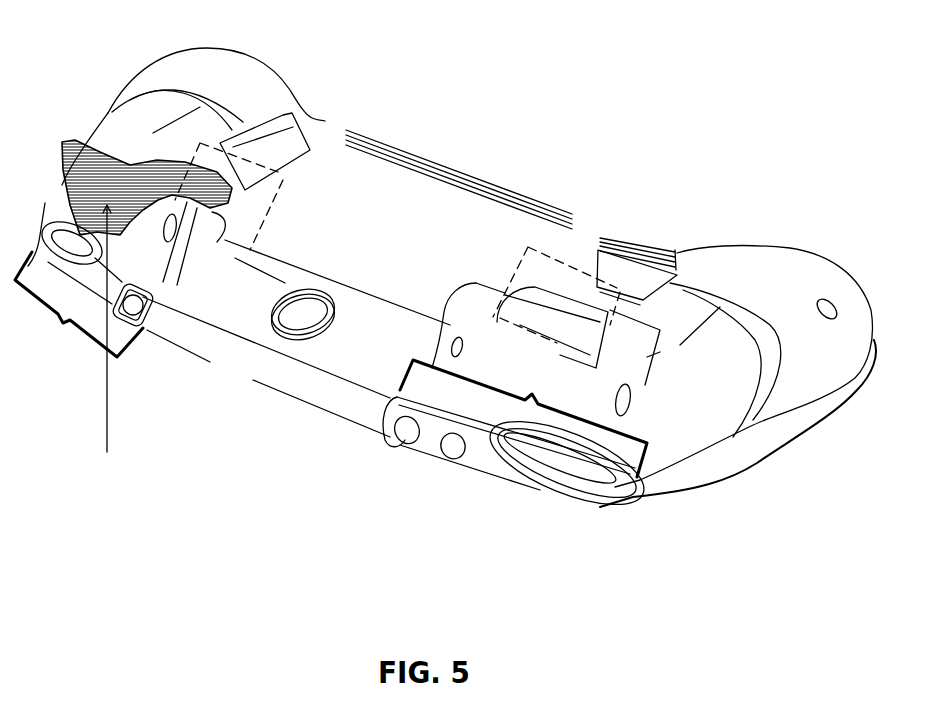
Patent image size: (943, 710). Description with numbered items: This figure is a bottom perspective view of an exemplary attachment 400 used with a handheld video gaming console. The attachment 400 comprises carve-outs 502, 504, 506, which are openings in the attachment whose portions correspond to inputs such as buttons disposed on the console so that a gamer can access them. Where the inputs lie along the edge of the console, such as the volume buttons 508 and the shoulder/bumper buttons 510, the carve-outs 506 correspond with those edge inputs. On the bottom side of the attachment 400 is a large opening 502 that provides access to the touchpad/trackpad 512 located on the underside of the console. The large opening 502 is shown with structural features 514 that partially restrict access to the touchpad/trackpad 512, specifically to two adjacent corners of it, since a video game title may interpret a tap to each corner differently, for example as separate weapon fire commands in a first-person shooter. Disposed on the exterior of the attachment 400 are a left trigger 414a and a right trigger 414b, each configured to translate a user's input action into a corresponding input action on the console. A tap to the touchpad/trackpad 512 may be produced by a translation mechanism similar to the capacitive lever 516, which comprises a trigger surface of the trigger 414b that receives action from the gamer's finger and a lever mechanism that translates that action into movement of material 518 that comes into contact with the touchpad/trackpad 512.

The attachment 400 is at (212, 58).
The large opening 502 is at (483, 198).
The carve-out 504 is at (278, 328).
The carve-outs 506 is at (331, 364).
The volume buttons 508 is at (407, 432).
The shoulder/bumper buttons 510 is at (78, 252).
The touchpad/trackpad 512 is at (370, 230).
The structural features 514 is at (275, 175).
The capacitive lever 516 is at (167, 165).
The material 518 is at (218, 212).
The left trigger 414a is at (593, 370).
The right trigger 414b is at (107, 452).